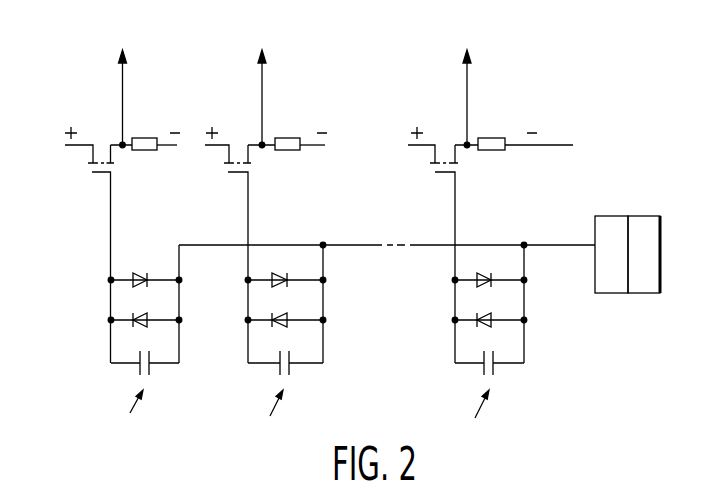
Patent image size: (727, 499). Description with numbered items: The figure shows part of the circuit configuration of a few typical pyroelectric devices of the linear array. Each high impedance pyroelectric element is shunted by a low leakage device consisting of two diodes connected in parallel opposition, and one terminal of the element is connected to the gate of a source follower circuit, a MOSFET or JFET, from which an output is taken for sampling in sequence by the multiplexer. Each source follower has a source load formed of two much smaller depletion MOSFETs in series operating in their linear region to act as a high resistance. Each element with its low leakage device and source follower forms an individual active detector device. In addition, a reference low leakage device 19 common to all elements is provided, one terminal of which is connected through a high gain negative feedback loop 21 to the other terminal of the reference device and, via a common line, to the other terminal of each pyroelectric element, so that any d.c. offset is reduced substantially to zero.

The reference low leakage device 19 is at (618, 265).
The high gain negative feedback loop 21 is at (652, 265).